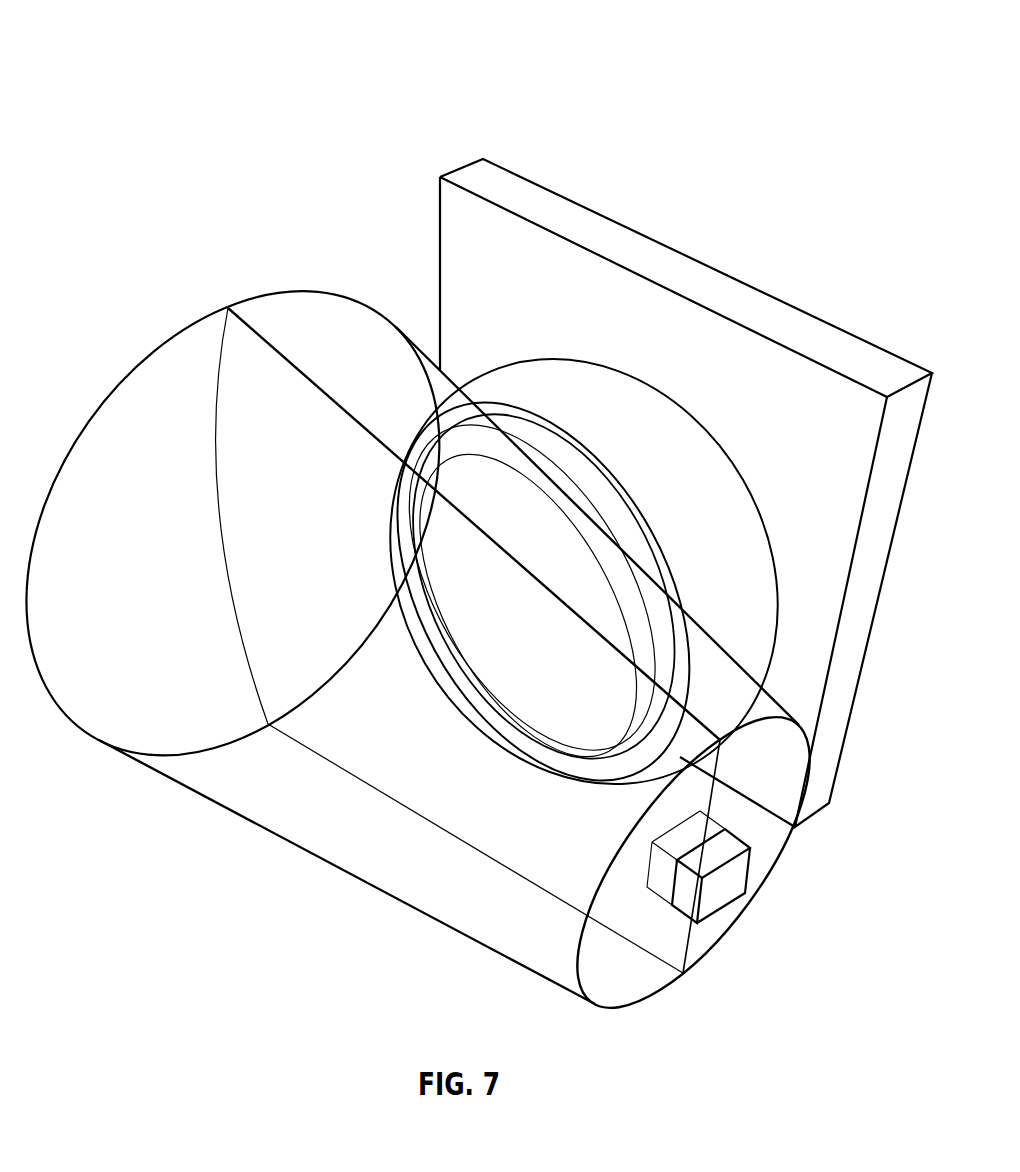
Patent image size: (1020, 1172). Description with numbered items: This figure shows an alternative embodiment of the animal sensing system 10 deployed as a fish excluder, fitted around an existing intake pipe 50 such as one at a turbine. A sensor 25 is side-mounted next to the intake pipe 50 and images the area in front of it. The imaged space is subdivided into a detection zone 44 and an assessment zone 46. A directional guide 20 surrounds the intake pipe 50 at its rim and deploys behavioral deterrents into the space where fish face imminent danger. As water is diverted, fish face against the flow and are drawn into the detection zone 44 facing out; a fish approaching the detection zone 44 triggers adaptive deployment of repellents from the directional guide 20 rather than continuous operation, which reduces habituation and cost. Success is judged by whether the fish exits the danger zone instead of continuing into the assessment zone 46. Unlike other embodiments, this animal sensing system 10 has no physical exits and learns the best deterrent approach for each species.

The animal sensing system 10 is at (141, 47).
The directional guide 20 is at (618, 527).
The sensor 25 is at (735, 880).
The detection zone 44 is at (132, 427).
The assessment zone 46 is at (328, 316).
The intake pipe 50 is at (547, 373).